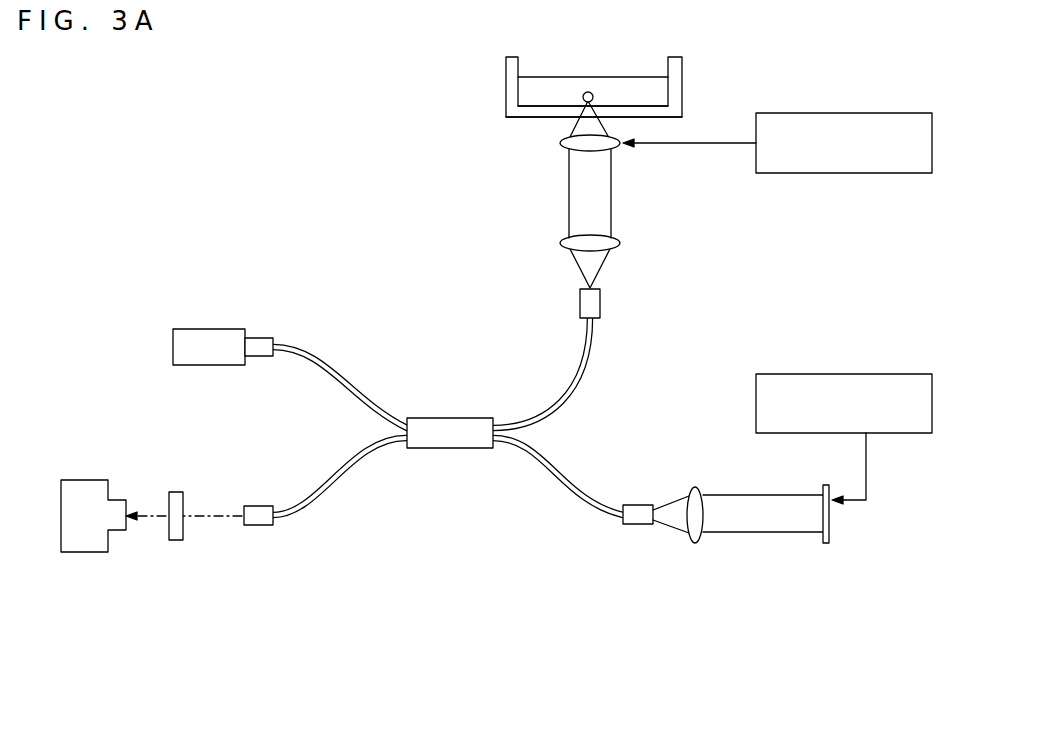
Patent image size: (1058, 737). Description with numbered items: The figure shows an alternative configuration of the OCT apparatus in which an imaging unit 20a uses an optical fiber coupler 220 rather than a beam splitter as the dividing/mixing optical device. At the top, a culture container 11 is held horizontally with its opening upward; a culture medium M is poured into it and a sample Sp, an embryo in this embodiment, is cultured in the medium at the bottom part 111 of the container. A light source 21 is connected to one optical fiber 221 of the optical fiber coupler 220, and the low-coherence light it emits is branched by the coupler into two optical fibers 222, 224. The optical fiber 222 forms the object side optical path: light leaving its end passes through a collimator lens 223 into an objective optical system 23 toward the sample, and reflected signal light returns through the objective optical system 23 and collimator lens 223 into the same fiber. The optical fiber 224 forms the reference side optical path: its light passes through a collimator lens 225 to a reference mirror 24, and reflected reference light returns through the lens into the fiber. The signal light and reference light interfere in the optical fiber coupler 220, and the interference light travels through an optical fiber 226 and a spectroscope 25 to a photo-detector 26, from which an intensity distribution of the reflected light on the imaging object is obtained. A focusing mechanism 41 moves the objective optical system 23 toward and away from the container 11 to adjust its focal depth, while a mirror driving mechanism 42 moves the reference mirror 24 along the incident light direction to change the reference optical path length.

The culture container 11 is at (683, 80).
The bottom part 111 is at (524, 114).
The culture medium M is at (546, 78).
The sample Sp is at (593, 93).
The objective optical system 23 is at (565, 148).
The collimator lens 223 is at (620, 246).
The optical fiber 222 is at (584, 371).
The optical fiber 221 is at (330, 358).
The optical fiber coupler 220 is at (455, 418).
The optical fiber 224 is at (569, 481).
The optical fiber 226 is at (348, 474).
The collimator lens 225 is at (690, 487).
The reference mirror 24 is at (826, 544).
The mirror driving mechanism 42 is at (823, 374).
The focusing mechanism 41 is at (820, 113).
The light source 21 is at (210, 329).
The spectroscope 25 is at (176, 492).
The photo-detector 26 is at (92, 553).
The imaging unit 20a is at (403, 226).